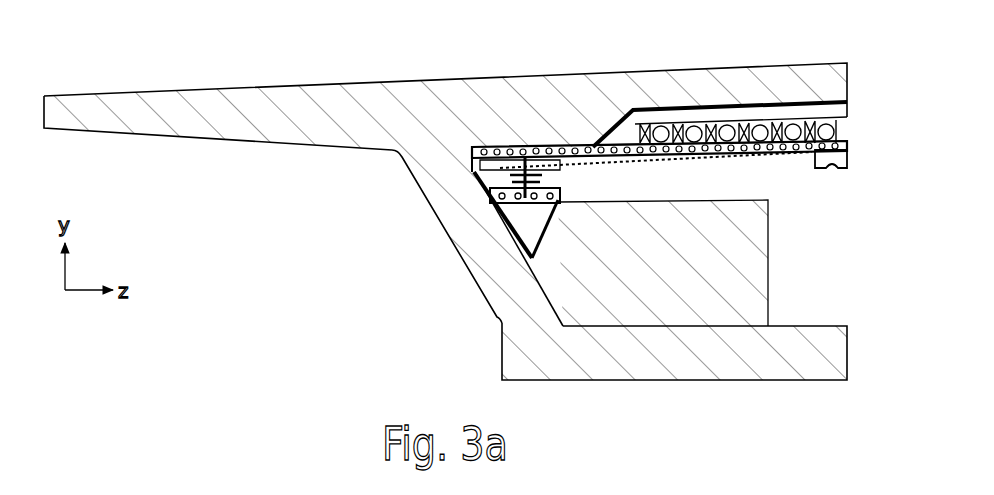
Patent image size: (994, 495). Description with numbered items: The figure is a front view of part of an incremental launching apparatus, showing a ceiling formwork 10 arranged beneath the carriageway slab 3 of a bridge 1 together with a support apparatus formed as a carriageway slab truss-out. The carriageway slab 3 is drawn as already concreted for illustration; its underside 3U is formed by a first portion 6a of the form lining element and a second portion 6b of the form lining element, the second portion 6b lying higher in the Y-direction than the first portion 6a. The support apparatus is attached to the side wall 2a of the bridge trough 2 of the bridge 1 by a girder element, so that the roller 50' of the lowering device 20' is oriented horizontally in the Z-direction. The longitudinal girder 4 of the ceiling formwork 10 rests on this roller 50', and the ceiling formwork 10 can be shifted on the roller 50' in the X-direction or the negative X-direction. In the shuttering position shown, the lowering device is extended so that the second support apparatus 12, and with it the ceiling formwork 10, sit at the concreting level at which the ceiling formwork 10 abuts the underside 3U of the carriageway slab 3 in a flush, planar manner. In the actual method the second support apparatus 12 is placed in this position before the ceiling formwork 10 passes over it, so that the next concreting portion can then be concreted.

The bridge 1 is at (387, 166).
The bridge trough 2 is at (516, 348).
The side wall 2a is at (532, 265).
The carriageway slab 3 is at (500, 107).
The underside 3U is at (848, 102).
The longitudinal girder 4 is at (509, 218).
The first portion of the form lining element 6a is at (556, 148).
The second portion of the form lining element 6b is at (753, 138).
The ceiling formwork 10 is at (756, 132).
The second support apparatus 12 is at (574, 231).
The lowering device 20' is at (576, 263).
The roller 50' is at (574, 179).